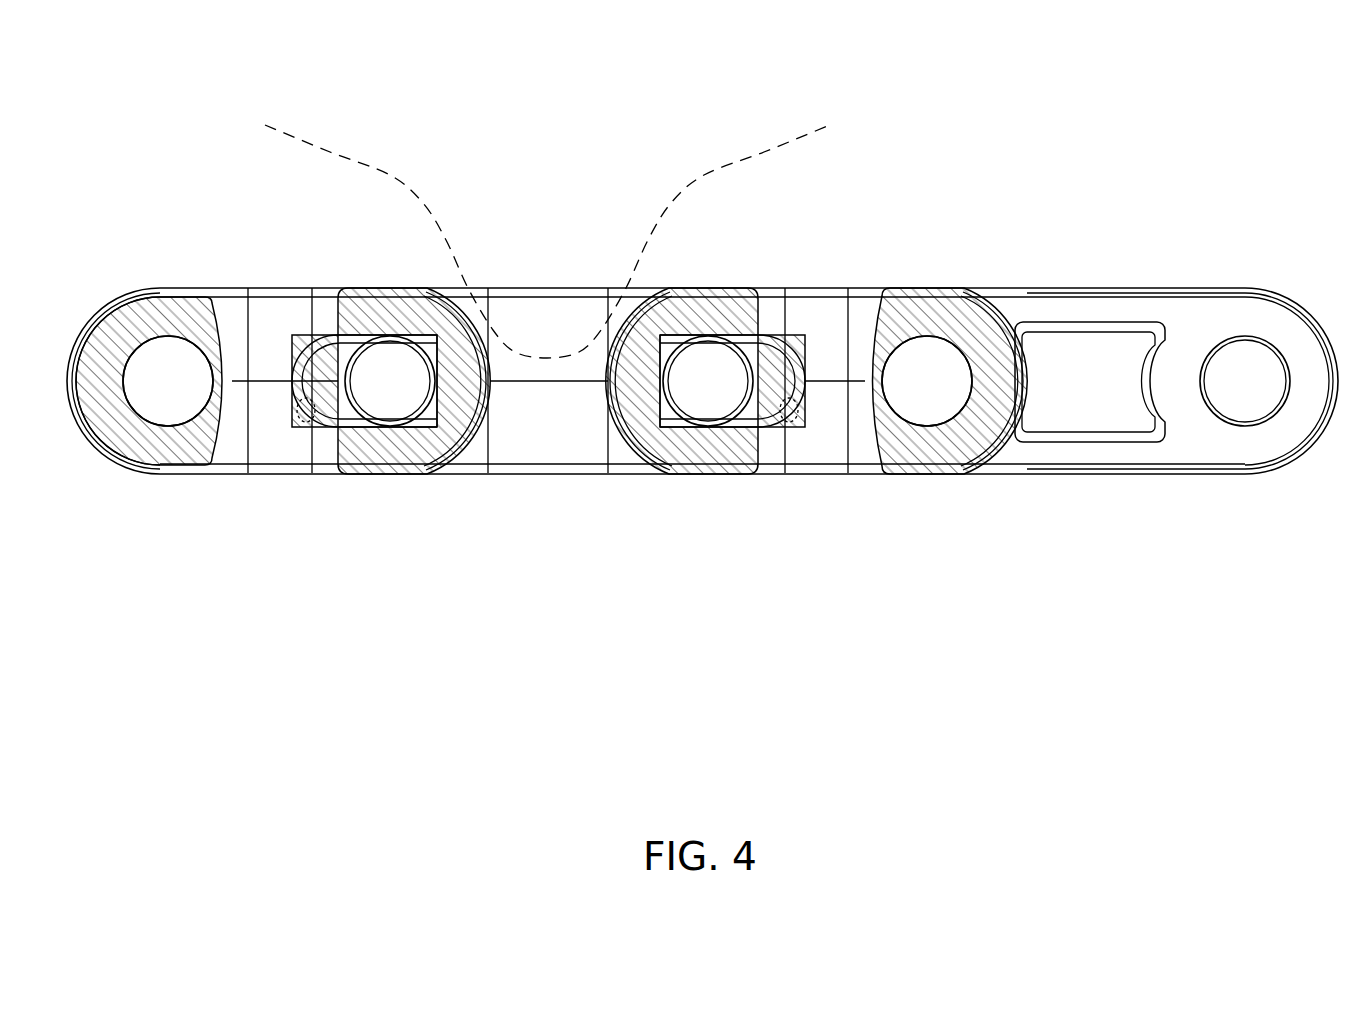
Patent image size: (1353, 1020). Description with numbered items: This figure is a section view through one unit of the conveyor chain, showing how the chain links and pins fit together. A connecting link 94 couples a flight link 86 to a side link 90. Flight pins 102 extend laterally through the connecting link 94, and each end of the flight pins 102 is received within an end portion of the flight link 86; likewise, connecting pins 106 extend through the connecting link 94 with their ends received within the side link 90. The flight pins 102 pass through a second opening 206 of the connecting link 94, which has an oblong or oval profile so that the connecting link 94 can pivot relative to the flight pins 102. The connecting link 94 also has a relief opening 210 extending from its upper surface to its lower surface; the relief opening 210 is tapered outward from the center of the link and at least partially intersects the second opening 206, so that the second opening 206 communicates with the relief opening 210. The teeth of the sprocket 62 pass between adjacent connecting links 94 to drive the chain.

The sprocket 62 is at (392, 172).
The flight link 86 is at (545, 333).
The side link 90 is at (1197, 312).
The connecting link 94 is at (392, 300).
The flight pin 102 is at (392, 390).
The connecting pin 106 is at (932, 392).
The second opening 206 is at (332, 423).
The relief opening 210 is at (248, 300).